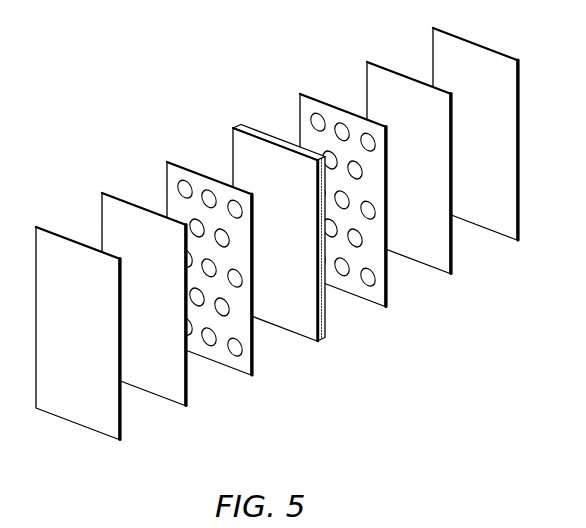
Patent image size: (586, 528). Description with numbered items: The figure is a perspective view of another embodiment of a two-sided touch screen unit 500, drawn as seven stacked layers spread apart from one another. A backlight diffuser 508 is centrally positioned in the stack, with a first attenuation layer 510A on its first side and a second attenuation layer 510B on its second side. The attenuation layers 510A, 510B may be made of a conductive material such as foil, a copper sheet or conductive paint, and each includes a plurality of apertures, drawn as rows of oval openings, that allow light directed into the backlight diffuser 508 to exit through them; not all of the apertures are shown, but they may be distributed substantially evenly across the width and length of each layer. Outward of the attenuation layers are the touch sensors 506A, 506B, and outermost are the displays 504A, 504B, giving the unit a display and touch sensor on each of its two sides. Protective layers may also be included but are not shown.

The two-sided touch screen unit 500 is at (83, 108).
The display 504A is at (78, 426).
The touch sensor 506A is at (151, 396).
The first attenuation layer 510A is at (218, 363).
The backlight diffuser 508 is at (283, 326).
The second attenuation layer 510B is at (353, 293).
The touch sensor 506B is at (416, 261).
The display 504B is at (485, 229).